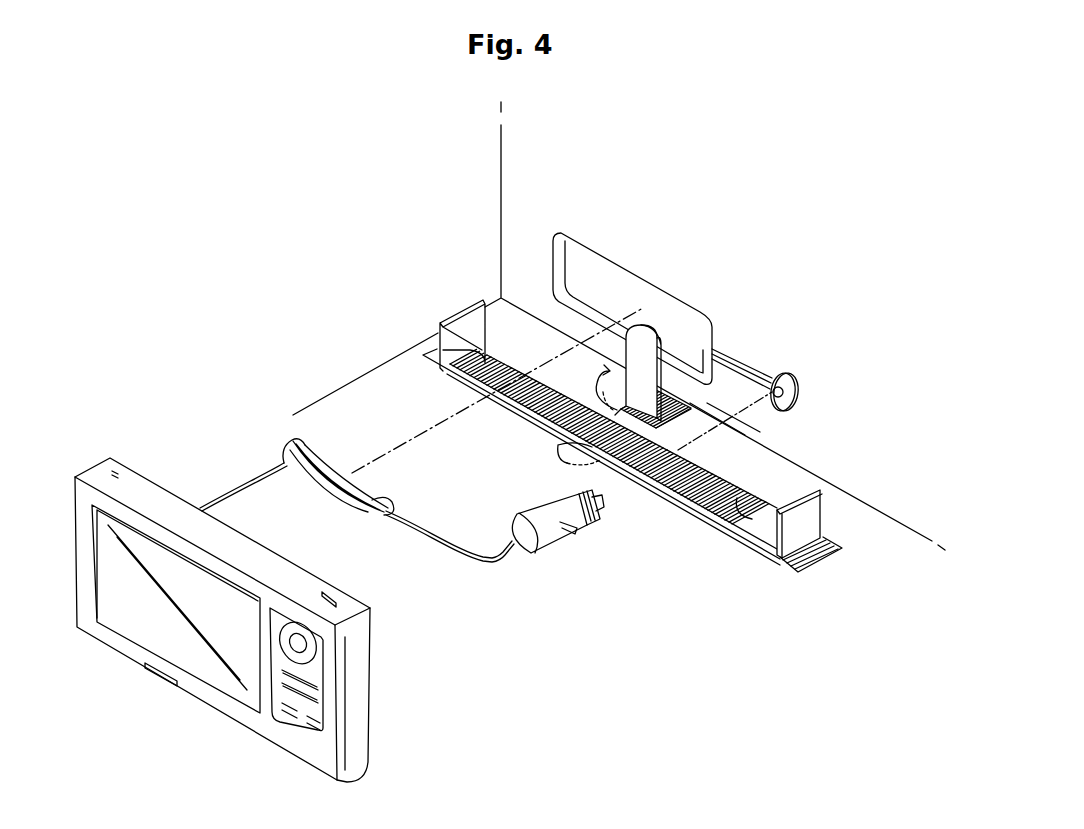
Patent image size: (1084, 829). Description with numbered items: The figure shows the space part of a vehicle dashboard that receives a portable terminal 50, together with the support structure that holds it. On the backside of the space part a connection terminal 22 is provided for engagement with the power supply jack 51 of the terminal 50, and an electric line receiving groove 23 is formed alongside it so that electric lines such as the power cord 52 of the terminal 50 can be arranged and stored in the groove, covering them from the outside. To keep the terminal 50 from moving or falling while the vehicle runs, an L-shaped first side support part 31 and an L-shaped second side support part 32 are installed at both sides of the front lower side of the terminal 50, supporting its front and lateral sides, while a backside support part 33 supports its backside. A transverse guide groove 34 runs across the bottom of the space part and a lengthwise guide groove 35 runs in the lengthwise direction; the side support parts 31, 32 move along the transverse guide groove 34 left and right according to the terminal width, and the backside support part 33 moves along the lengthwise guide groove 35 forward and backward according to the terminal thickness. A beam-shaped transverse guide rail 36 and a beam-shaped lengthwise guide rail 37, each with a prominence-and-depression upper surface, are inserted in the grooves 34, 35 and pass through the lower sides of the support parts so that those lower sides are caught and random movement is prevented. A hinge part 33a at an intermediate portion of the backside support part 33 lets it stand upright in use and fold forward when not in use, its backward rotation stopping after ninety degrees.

The connection terminal 22 is at (772, 375).
The electric line receiving groove 23 is at (619, 293).
The first side support part 31 is at (450, 320).
The second side support part 32 is at (813, 527).
The backside support part 33 is at (626, 360).
The hinge part 33a is at (637, 403).
The transverse guide groove 34 is at (773, 550).
The lengthwise guide groove 35 is at (690, 403).
The transverse guide rail 36 is at (707, 516).
The lengthwise guide rail 37 is at (707, 403).
The terminal 50 is at (148, 637).
The power supply jack 51 is at (583, 520).
The power cord 52 is at (285, 437).